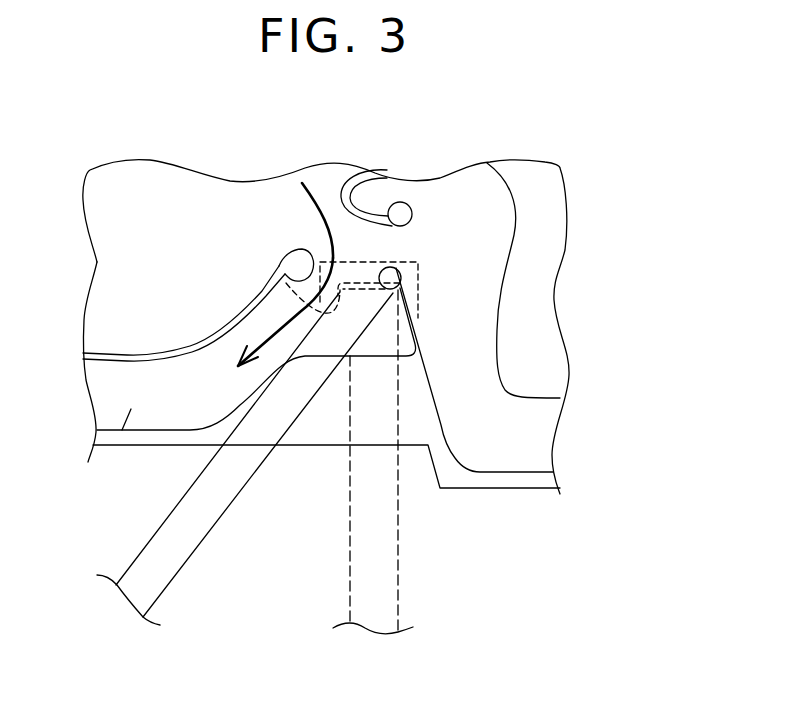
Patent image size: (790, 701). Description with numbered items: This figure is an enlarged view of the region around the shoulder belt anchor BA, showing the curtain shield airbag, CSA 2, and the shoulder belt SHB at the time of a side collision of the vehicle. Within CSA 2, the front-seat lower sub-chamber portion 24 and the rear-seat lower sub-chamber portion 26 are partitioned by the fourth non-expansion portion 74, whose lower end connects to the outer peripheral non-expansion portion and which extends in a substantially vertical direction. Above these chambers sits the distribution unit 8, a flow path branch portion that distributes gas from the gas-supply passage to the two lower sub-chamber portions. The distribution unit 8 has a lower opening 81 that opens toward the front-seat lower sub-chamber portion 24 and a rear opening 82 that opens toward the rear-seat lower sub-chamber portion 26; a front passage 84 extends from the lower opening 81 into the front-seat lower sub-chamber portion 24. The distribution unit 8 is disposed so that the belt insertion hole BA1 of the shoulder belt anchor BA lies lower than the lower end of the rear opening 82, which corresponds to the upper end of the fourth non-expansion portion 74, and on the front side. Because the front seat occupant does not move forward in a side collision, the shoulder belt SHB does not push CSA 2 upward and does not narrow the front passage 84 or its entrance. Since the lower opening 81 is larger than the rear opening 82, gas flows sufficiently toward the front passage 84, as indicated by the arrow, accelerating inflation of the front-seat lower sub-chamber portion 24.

The curtain shield airbag (CSA) 2 is at (148, 188).
The distribution unit 8 is at (338, 188).
The lower opening 81 is at (314, 240).
The rear opening 82 is at (418, 240).
The front passage 84 is at (276, 265).
The belt insertion hole BA1 is at (272, 286).
The shoulder belt anchor BA is at (418, 262).
The fourth non-expansion portion 74 is at (418, 330).
The rear-seat lower sub-chamber portion 26 is at (523, 423).
The front-seat lower sub-chamber portion 24 is at (122, 430).
The shoulder belt SHB is at (200, 545).